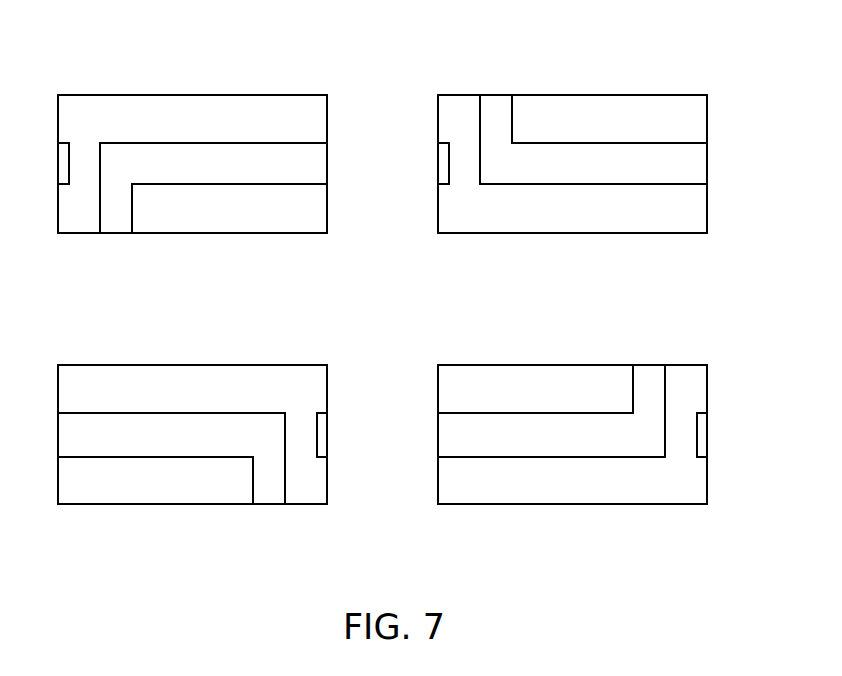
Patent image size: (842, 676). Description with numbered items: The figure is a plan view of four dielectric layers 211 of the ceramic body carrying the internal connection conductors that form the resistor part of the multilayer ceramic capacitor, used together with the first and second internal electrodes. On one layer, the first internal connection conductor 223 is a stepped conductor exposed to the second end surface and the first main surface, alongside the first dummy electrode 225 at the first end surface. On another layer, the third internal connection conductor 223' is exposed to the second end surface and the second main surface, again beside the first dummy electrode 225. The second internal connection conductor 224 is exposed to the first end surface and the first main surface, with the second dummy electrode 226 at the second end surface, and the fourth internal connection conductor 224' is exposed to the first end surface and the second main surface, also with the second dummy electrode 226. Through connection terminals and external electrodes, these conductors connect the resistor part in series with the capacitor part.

The dielectric layer 211 is at (313, 105).
The first internal connection conductor 223 is at (213, 219).
The third internal connection conductor 223' is at (593, 110).
The second internal connection conductor 224 is at (171, 489).
The fourth internal connection conductor 224' is at (551, 382).
The first dummy electrode 225 is at (63, 163).
The second dummy electrode 226 is at (321, 436).